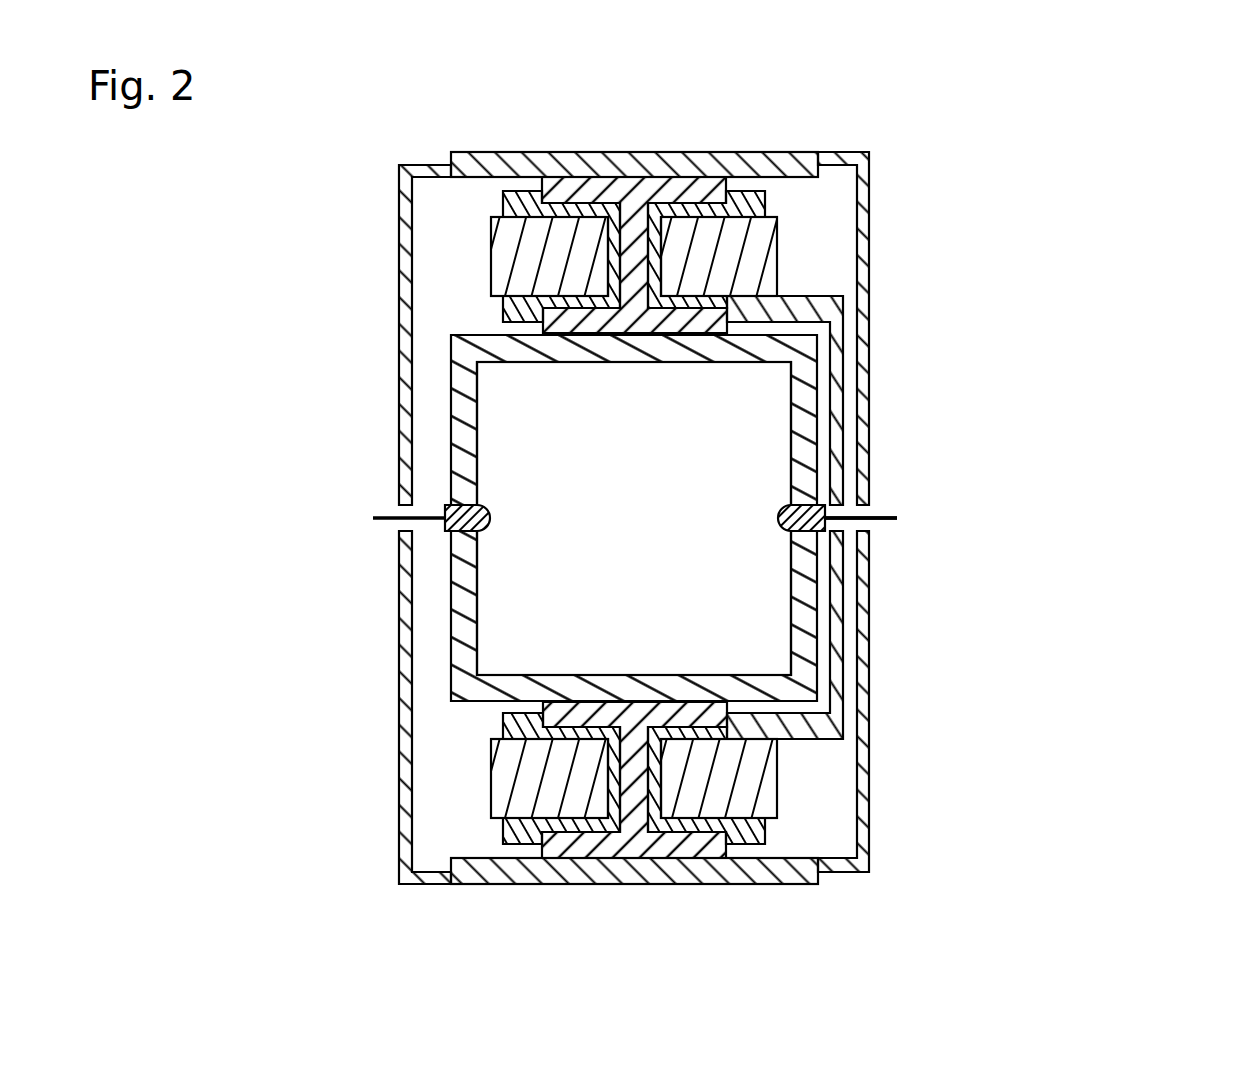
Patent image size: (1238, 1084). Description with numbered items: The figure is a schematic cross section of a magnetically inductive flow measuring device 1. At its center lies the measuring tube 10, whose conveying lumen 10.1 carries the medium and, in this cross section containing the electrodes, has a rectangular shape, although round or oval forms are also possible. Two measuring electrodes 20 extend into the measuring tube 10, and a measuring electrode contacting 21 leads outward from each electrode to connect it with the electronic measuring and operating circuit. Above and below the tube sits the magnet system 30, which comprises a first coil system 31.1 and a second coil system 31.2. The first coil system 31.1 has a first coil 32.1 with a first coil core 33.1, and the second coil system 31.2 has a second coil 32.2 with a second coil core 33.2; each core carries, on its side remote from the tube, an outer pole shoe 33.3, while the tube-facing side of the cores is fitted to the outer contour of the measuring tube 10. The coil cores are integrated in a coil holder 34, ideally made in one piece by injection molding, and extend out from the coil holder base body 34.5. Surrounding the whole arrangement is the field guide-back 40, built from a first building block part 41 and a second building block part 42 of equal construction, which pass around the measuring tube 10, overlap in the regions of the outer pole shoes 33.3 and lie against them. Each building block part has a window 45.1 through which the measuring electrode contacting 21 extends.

The magnetically inductive flow measuring device 1 is at (1000, 883).
The measuring tube 10 is at (800, 688).
The conveying lumen 10.1 is at (505, 623).
The measuring electrode 20 is at (795, 521).
The measuring electrode contacting 21 is at (872, 517).
The magnet system 30 is at (438, 217).
The first coil system 31.1 is at (503, 268).
The second coil system 31.2 is at (517, 794).
The first coil 32.1 is at (767, 255).
The second coil 32.2 is at (778, 805).
The first coil core 33.1 is at (699, 190).
The second coil core 33.2 is at (698, 857).
The outer pole shoe 33.3 is at (753, 500).
The coil holder 34 is at (832, 308).
The coil holder base body 34.5 is at (500, 203).
The field guide-back 40 is at (596, 518).
The first building block part 41 is at (404, 393).
The second building block part 42 is at (862, 380).
The window 45.1 is at (404, 523).